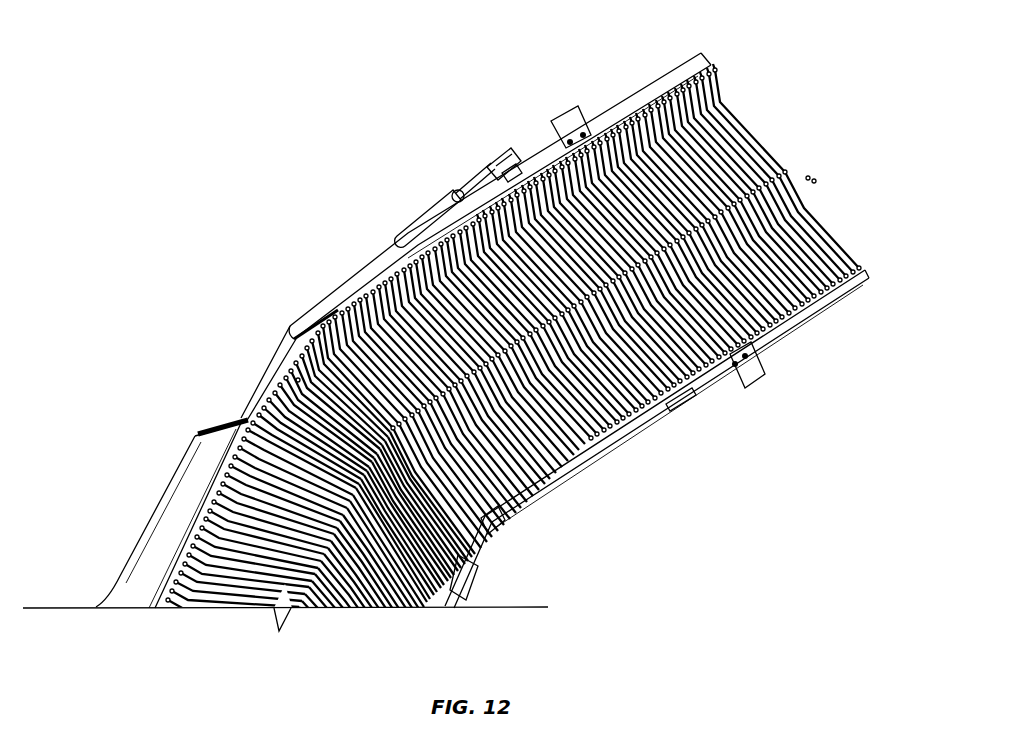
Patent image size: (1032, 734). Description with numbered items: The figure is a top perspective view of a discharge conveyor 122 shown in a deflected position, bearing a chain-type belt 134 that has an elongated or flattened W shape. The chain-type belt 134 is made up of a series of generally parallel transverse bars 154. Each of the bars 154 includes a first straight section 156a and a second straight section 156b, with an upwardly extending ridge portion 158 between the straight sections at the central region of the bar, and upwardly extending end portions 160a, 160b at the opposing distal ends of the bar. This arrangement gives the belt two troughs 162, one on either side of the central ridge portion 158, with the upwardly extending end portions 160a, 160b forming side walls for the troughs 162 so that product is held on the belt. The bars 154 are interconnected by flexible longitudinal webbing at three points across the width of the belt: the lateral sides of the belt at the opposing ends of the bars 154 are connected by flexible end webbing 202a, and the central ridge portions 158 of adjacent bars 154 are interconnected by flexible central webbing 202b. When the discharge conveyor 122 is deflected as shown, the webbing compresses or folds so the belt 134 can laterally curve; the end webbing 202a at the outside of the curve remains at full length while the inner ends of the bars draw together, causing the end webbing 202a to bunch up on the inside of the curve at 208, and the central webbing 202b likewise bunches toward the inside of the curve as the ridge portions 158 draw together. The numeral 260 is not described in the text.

The discharge conveyor 122 is at (316, 190).
The chain-type belt 134 is at (613, 413).
The transverse bars 154 is at (673, 128).
The first straight section 156a is at (743, 123).
The second straight section 156b is at (820, 230).
The ridge portion 158 is at (780, 162).
The first end portion 160a is at (715, 73).
The second end portion 160b is at (852, 258).
The troughs 162 is at (549, 378).
The end webbing 202a is at (752, 326).
The central webbing 202b is at (803, 168).
The inside of the curve 208 is at (487, 519).
The frame post edge 260 is at (228, 392).